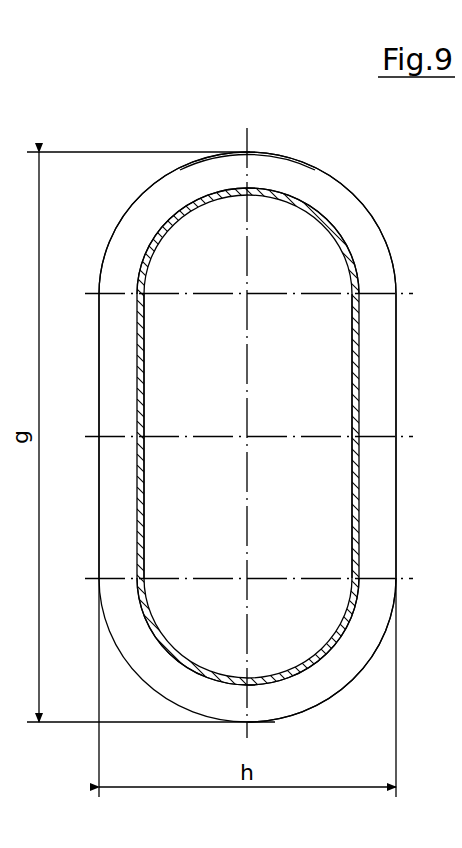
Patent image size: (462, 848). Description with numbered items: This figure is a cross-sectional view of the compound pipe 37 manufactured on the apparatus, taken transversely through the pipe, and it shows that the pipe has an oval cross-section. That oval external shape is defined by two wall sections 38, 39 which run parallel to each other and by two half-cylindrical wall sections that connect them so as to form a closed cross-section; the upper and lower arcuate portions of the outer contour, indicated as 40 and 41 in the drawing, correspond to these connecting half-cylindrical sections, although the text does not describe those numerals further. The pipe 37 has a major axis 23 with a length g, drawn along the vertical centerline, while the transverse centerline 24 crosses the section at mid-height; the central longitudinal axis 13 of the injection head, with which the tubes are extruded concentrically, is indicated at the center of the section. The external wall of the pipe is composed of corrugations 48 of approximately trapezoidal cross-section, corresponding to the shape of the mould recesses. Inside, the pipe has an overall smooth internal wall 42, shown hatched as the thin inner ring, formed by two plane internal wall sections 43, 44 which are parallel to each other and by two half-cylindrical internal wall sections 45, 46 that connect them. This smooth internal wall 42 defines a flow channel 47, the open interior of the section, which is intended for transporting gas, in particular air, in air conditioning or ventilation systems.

The central longitudinal axis 13 is at (250, 436).
The major axis 23 is at (247, 148).
The transverse centerline 24 is at (403, 439).
The compound pipe 37 is at (219, 134).
The wall section 38 is at (97, 367).
The wall section 39 is at (398, 333).
The upper right arcuate section of outer tube 40 is at (365, 199).
The lower right arcuate section of outer tube 41 is at (329, 701).
The internal wall 42 is at (147, 380).
The internal wall section 43 is at (143, 423).
The internal wall section 44 is at (351, 496).
The half-cylindrical internal wall section 45 is at (196, 205).
The half-cylindrical internal wall section 46 is at (193, 661).
The flow channel 47 is at (203, 529).
The corrugation 48 is at (135, 198).